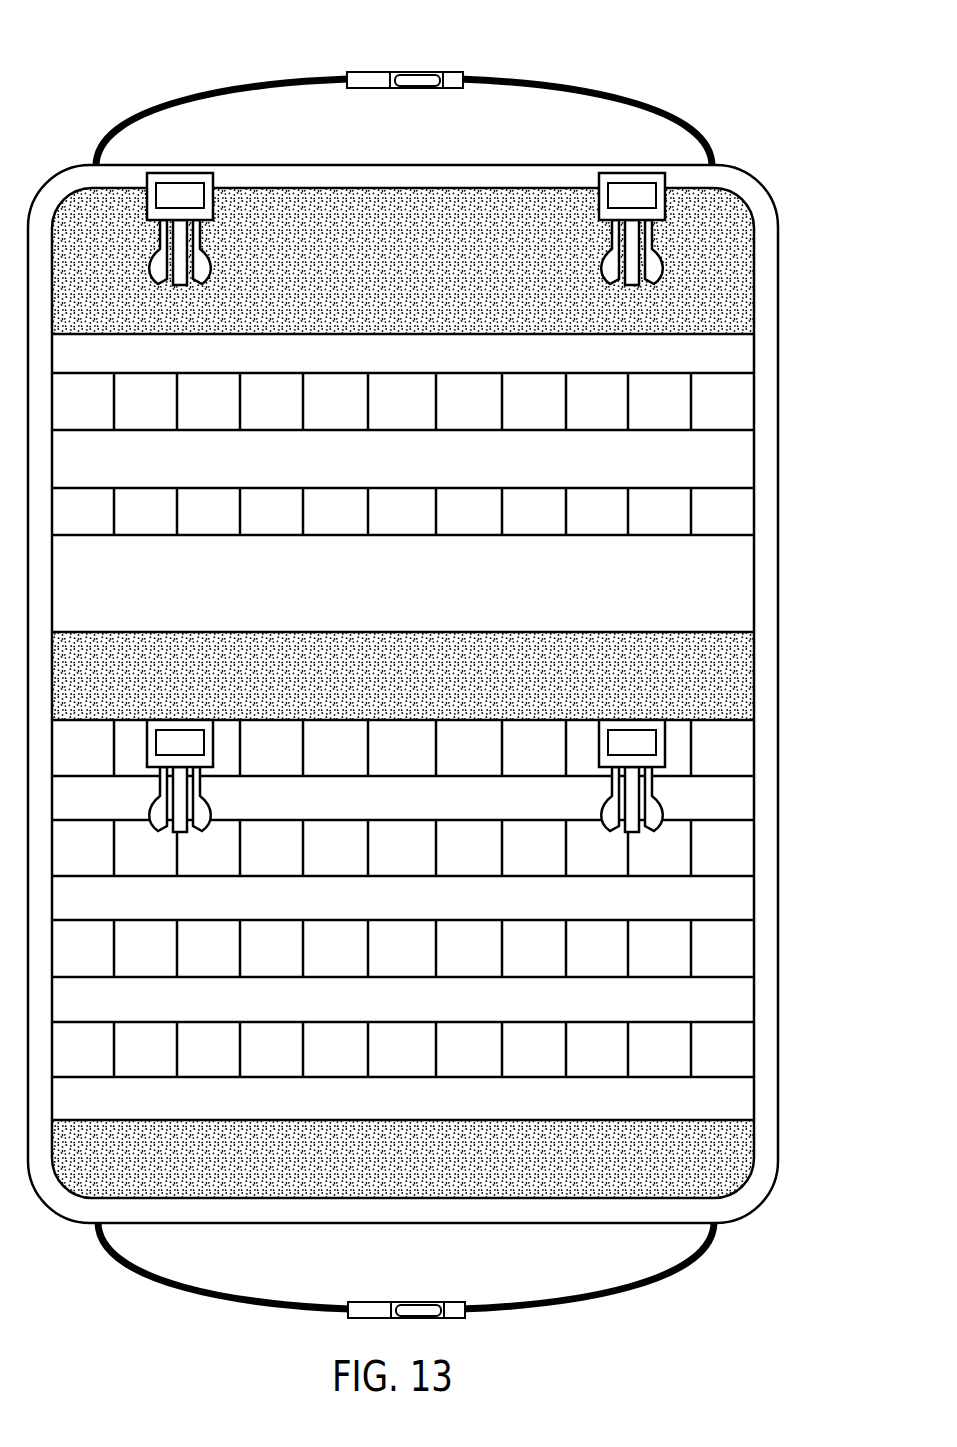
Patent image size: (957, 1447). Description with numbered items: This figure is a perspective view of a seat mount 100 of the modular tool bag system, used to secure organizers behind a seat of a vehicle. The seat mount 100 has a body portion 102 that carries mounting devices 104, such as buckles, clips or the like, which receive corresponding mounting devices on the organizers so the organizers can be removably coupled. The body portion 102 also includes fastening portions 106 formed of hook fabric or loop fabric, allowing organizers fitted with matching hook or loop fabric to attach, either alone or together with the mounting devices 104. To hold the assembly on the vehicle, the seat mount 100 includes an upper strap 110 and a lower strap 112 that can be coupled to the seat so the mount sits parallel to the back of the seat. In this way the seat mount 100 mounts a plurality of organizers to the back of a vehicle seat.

The seat mount 100 is at (705, 88).
The body portion 102 is at (478, 693).
The mounting devices 104 is at (670, 193).
The fastening portions 106 is at (705, 298).
The upper strap 110 is at (567, 83).
The lower strap 112 is at (602, 1298).